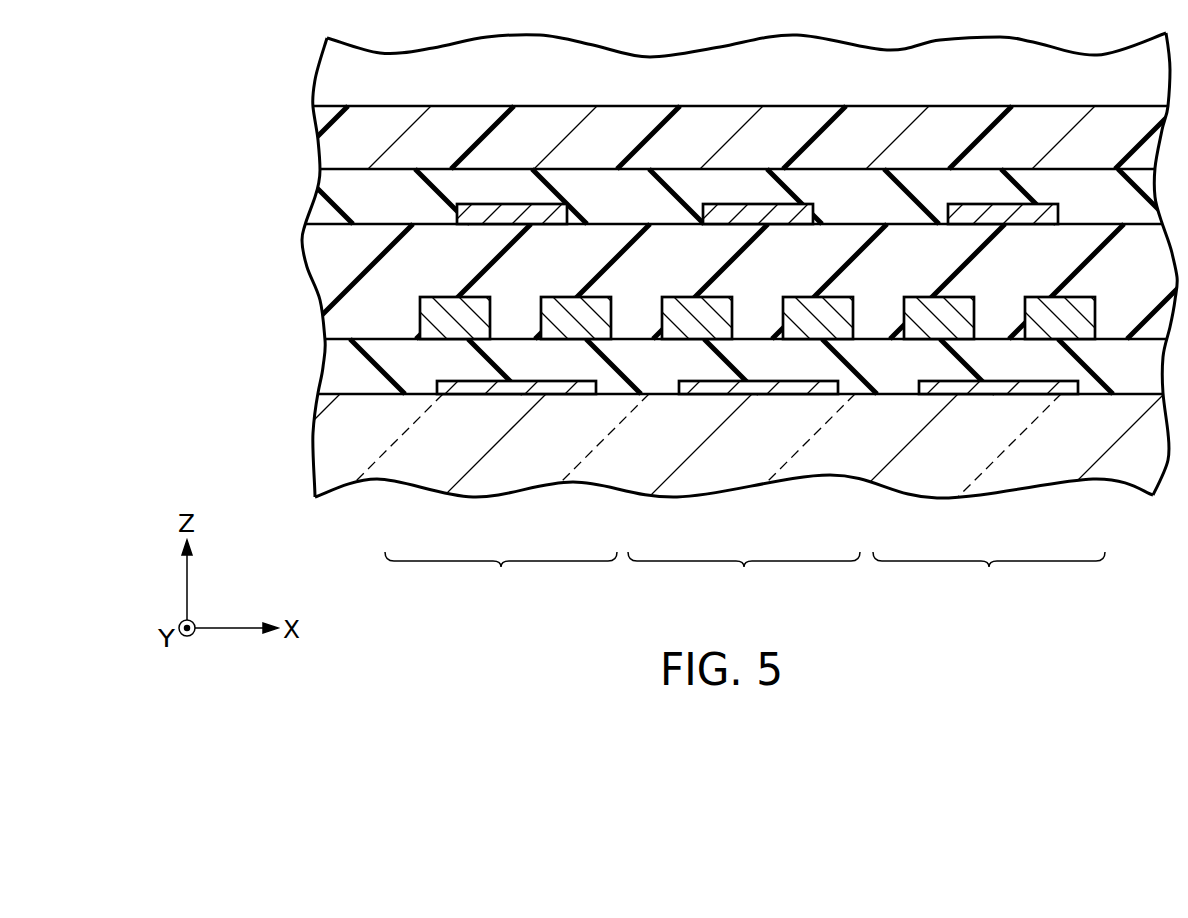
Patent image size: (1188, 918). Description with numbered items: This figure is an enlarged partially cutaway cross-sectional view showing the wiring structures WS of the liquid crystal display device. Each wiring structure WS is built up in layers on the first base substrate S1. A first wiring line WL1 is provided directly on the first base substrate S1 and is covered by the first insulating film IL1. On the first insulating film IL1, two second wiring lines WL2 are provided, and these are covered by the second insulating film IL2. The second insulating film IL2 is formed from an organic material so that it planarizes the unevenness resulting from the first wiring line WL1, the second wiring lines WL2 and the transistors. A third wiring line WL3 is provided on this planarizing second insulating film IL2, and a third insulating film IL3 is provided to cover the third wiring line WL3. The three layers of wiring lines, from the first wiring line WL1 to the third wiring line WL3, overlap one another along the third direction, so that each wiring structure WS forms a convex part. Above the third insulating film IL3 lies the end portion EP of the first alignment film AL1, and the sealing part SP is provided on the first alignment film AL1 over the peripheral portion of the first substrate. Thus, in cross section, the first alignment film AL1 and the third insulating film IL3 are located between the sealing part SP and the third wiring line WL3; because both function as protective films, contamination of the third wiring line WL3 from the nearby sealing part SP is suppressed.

The sealing part SP is at (327, 80).
The first alignment film AL1 is at (696, 147).
The end portion of the first alignment film EP is at (327, 145).
The third insulating film IL3 is at (323, 200).
The second insulating film IL2 is at (322, 297).
The first insulating film IL1 is at (333, 368).
The first base substrate S1 is at (320, 437).
The first wiring line WL1 is at (1008, 523).
The second wiring line WL2 is at (1070, 523).
The third wiring line WL3 is at (960, 523).
The wiring structure WS is at (745, 577).